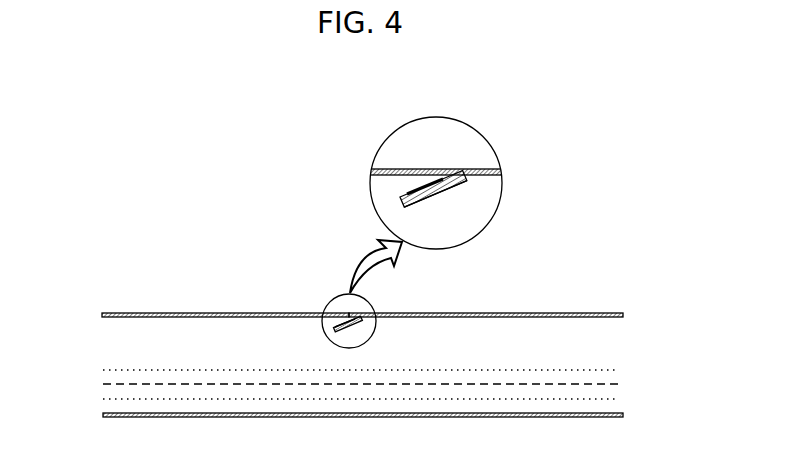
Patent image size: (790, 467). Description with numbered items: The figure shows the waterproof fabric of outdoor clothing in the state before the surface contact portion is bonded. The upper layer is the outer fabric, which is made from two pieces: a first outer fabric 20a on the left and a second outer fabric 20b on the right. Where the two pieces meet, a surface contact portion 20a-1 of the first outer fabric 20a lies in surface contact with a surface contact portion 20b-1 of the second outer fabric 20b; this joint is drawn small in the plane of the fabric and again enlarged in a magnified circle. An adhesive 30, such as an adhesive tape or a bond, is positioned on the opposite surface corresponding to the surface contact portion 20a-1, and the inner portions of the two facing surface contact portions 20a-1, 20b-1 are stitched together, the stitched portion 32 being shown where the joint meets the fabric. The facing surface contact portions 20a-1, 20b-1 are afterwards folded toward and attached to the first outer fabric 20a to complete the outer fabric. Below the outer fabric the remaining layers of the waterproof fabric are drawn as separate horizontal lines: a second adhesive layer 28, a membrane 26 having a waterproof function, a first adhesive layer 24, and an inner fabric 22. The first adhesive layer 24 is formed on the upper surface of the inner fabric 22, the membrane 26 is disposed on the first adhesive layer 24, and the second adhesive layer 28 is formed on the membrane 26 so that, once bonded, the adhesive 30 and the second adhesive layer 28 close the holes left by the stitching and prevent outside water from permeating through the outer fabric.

The first outer fabric 20a is at (212, 312).
The second outer fabric 20b is at (524, 312).
The surface contact portion of the first outer fabric 20a-1 is at (400, 205).
The surface contact portion of the second outer fabric 20b-1 is at (402, 208).
The adhesive 30 is at (409, 194).
The stitched portion 32 is at (466, 181).
The second adhesive layer 28 is at (623, 370).
The membrane 26 is at (103, 384).
The first adhesive layer 24 is at (623, 398).
The inner fabric 22 is at (103, 414).